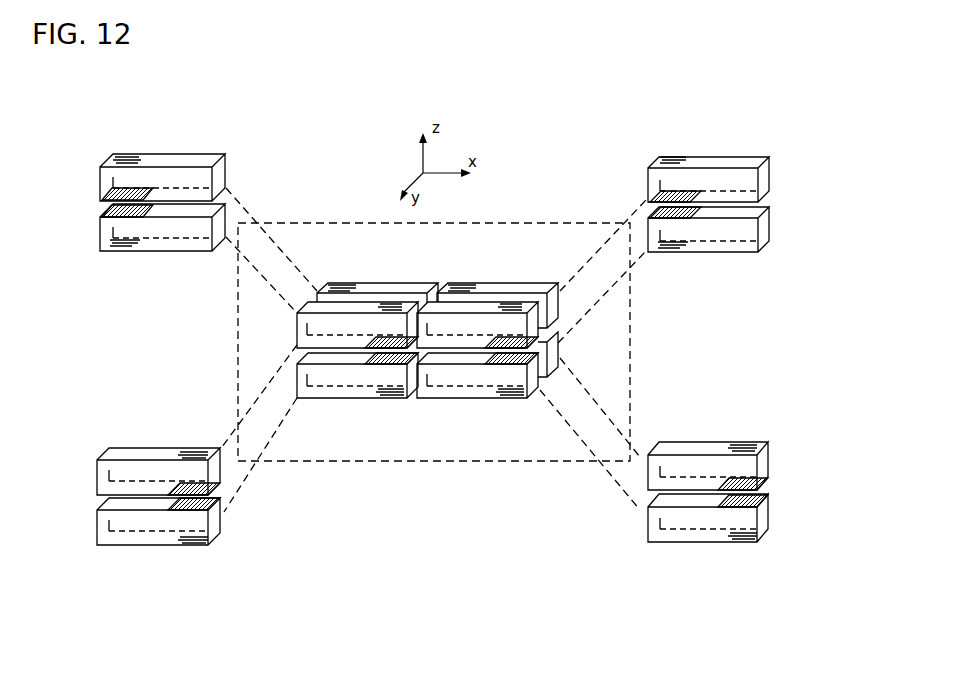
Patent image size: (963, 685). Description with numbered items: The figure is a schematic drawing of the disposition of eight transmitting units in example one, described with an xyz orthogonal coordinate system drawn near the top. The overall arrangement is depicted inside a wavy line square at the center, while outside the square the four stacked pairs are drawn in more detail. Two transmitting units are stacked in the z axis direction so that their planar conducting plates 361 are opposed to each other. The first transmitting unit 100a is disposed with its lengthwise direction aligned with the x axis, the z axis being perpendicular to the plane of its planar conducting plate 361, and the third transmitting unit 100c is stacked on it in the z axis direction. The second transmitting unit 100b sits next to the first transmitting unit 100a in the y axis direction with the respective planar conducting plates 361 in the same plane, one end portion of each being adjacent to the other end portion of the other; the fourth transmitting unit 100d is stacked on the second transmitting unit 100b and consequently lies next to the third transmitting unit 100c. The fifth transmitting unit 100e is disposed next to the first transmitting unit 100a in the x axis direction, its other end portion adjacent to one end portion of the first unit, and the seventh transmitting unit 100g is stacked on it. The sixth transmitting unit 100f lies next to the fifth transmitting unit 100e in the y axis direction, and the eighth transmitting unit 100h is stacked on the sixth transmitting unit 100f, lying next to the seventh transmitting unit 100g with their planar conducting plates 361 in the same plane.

The first transmitting unit 100a is at (152, 246).
The second transmitting unit 100b is at (143, 542).
The third transmitting unit 100c is at (178, 160).
The fourth transmitting unit 100d is at (127, 452).
The fifth transmitting unit 100e is at (723, 249).
The sixth transmitting unit 100f is at (690, 537).
The seventh transmitting unit 100g is at (738, 160).
The eighth transmitting unit 100h is at (705, 452).
The planar conducting plate 361 is at (102, 207).